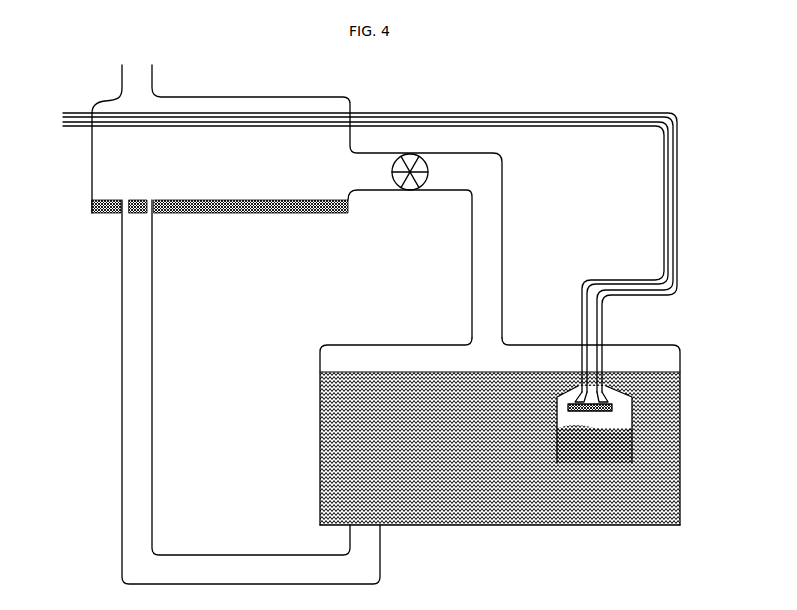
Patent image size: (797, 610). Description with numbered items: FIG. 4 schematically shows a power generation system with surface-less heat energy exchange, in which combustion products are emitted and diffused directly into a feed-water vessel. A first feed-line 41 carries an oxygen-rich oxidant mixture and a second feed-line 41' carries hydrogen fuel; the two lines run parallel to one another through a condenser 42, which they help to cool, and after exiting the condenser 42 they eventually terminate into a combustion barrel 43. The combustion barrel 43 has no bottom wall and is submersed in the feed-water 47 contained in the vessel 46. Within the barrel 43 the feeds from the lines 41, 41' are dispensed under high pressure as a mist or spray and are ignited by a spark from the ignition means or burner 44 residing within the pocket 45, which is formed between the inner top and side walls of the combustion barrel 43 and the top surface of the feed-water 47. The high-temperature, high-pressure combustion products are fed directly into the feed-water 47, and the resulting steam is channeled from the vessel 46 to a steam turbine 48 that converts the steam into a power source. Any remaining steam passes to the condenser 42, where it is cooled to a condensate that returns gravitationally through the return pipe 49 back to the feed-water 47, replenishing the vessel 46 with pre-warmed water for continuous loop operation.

The first feed-line 41 is at (345, 230).
The second feed-line 41' is at (342, 257).
The condenser 42 is at (90, 167).
The combustion barrel 43 is at (633, 370).
The ignition means or burner 44 is at (680, 438).
The pocket 45 is at (623, 528).
The vessel 46 is at (525, 527).
The feed-water 47 is at (432, 527).
The steam turbine 48 is at (398, 189).
The return pipe 49 is at (120, 520).